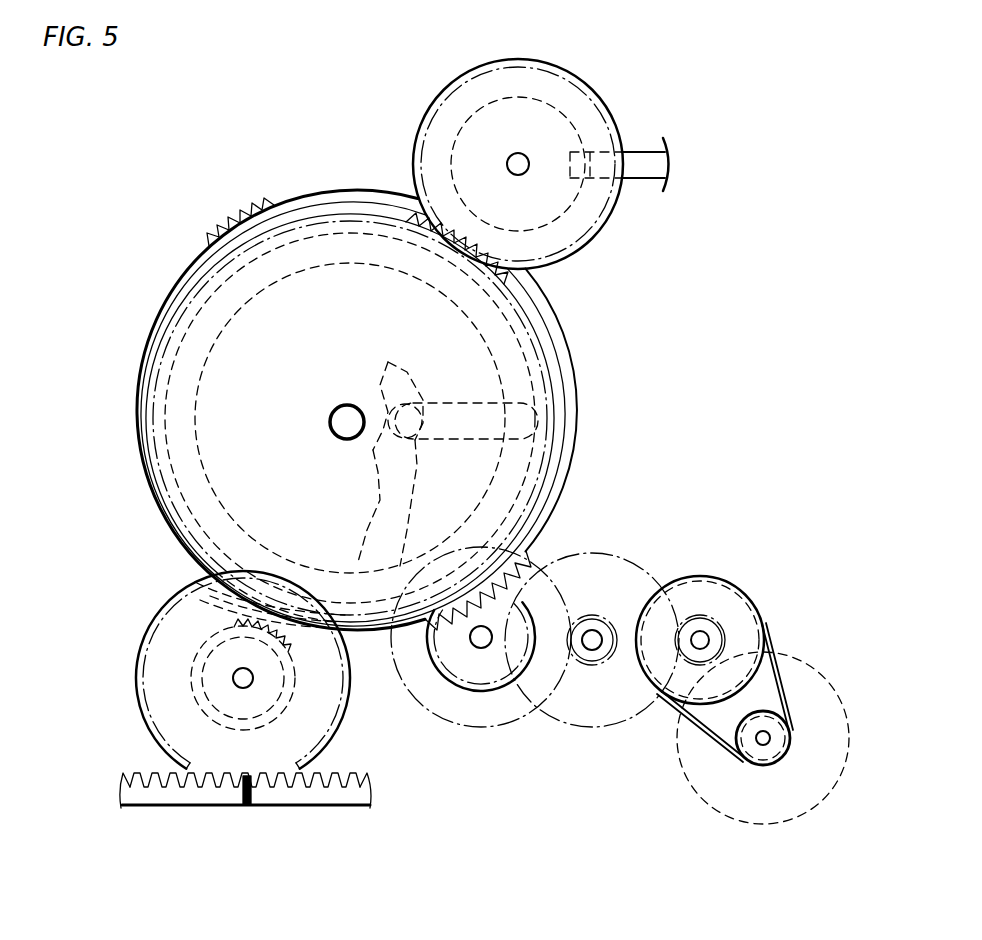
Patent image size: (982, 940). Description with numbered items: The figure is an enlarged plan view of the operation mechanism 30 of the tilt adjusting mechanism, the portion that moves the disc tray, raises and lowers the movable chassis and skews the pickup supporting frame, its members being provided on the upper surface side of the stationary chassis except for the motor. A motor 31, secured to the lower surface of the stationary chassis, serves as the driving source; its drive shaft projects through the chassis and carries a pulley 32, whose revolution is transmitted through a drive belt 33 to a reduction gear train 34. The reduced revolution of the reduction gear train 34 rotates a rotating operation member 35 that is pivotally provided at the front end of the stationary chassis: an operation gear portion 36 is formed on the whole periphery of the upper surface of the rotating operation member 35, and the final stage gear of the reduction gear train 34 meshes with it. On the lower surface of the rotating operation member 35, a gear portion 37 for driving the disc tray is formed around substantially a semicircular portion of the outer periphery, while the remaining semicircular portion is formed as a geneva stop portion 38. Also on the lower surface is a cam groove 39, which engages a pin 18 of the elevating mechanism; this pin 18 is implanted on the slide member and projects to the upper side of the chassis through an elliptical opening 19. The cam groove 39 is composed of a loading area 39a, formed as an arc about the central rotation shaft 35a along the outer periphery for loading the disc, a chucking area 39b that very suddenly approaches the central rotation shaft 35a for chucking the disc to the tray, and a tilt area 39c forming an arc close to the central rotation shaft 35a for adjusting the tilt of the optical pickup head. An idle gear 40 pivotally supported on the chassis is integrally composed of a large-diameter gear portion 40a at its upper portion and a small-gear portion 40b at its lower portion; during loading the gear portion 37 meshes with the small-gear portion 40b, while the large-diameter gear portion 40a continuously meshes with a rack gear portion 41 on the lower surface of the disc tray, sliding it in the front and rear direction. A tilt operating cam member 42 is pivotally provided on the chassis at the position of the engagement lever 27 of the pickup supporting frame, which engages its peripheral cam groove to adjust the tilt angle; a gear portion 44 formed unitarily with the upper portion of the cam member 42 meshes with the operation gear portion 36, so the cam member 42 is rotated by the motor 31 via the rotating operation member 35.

The operation mechanism 30 is at (342, 132).
The pin 18 is at (400, 404).
The elliptical opening 19 is at (466, 434).
The engagement lever 27 is at (637, 162).
The motor 31 is at (815, 802).
The pulley 32 is at (743, 757).
The drive belt 33 is at (778, 675).
The reduction gear train 34 is at (533, 728).
The rotating operation member 35 is at (497, 352).
The central rotation shaft 35a is at (330, 423).
The operation gear portion 36 is at (557, 400).
The gear portion 37 is at (226, 240).
The geneva stop portion 38 is at (147, 363).
The cam groove 39 is at (205, 284).
The loading area 39a is at (220, 346).
The chucking area 39b is at (378, 492).
The tilt area 39c is at (366, 386).
The idle gear 40 is at (170, 662).
The large-diameter gear portion 40a is at (148, 724).
The small-gear portion 40b is at (204, 603).
The rack gear portion 41 is at (210, 792).
The tilt operating cam member 42 is at (536, 98).
The gear portion 44 is at (460, 76).